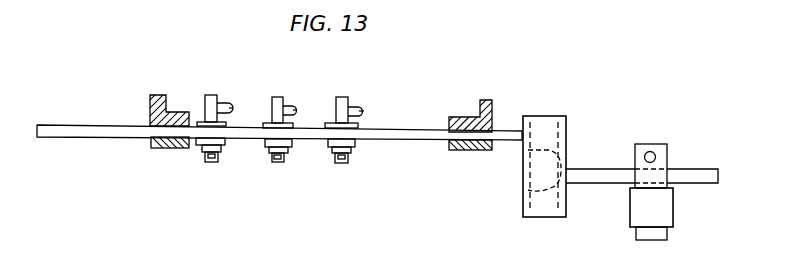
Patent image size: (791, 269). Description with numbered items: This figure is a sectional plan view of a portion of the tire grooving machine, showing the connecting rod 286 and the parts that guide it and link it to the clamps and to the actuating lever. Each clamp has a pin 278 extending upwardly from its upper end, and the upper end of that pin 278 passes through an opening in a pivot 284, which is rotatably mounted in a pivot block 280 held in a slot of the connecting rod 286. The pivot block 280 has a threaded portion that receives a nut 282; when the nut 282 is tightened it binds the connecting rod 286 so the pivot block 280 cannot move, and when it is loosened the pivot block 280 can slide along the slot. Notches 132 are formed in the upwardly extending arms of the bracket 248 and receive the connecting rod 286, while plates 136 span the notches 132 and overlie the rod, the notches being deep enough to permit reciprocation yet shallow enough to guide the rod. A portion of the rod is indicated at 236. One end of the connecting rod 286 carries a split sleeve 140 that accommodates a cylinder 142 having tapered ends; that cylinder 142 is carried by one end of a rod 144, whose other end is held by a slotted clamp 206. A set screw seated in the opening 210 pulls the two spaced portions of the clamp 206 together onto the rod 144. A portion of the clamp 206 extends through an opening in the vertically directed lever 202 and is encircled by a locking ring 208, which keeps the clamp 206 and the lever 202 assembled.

The notches 132 is at (152, 122).
The plates 136 is at (167, 149).
The split sleeve 140 is at (566, 122).
The cylinder 142 is at (522, 212).
The rod 144 is at (600, 169).
The lever 202 is at (667, 207).
The slotted clamp 206 is at (670, 148).
The locking ring 208 is at (638, 236).
The opening 210 is at (651, 151).
The slide bar portion 236 is at (413, 139).
The bracket 248 is at (160, 77).
The pin 278 is at (229, 105).
The pivot block 280 is at (332, 158).
The nut 282 is at (203, 152).
The pivot 284 is at (213, 95).
The connecting rod 286 is at (80, 137).